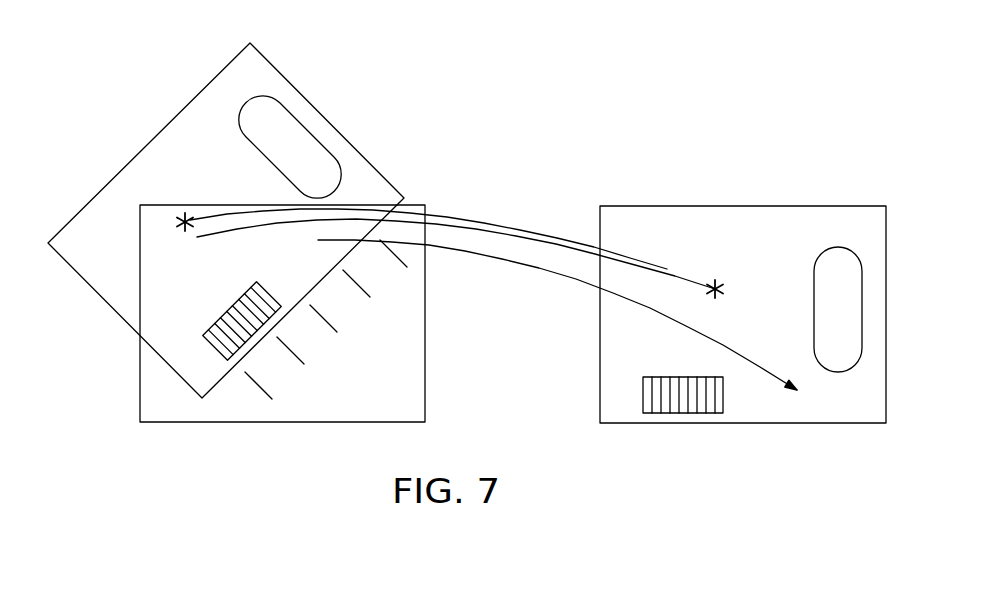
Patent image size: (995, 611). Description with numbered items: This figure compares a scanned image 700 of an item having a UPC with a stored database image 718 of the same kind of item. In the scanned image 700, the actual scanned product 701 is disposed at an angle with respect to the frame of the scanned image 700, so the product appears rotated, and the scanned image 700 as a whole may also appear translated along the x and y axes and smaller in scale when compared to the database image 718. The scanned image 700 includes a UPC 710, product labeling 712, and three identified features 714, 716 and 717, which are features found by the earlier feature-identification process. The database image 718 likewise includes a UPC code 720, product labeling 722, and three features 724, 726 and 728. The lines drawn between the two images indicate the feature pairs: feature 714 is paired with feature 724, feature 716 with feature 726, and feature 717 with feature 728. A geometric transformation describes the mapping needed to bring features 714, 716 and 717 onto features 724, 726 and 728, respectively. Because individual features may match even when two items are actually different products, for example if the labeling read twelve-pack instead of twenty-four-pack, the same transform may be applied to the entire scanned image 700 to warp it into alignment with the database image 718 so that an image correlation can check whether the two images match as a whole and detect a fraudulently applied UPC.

The scanned image 700 is at (140, 405).
The actual scanned product 701 is at (332, 119).
The product labeling 712 is at (235, 229).
The feature 714 is at (157, 257).
The feature 716 is at (190, 226).
The feature 717 is at (312, 240).
The UPC 710 is at (252, 327).
The database image 718 is at (838, 205).
The product labeling 722 is at (744, 298).
The feature 724 is at (665, 291).
The feature 726 is at (710, 297).
The feature 728 is at (793, 388).
The UPC code 720 is at (687, 409).